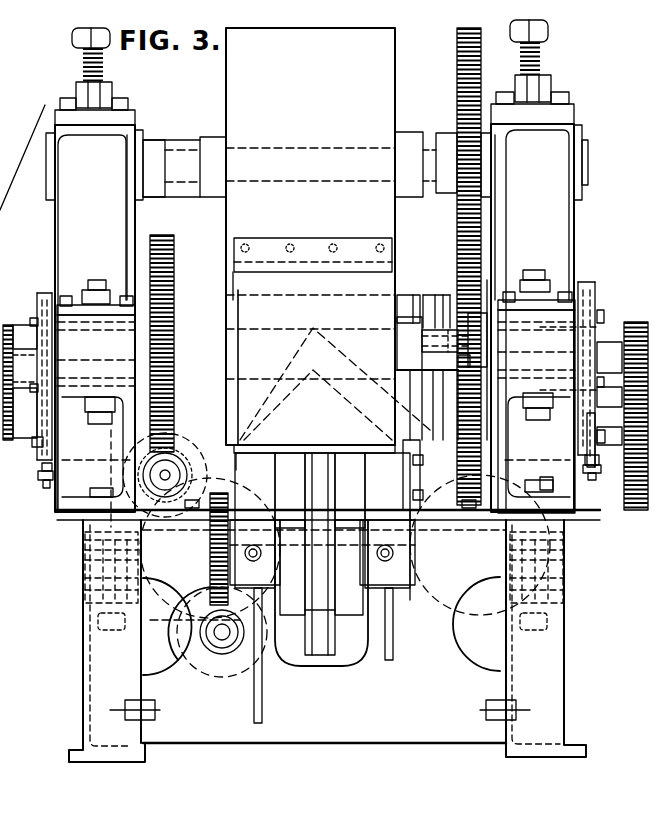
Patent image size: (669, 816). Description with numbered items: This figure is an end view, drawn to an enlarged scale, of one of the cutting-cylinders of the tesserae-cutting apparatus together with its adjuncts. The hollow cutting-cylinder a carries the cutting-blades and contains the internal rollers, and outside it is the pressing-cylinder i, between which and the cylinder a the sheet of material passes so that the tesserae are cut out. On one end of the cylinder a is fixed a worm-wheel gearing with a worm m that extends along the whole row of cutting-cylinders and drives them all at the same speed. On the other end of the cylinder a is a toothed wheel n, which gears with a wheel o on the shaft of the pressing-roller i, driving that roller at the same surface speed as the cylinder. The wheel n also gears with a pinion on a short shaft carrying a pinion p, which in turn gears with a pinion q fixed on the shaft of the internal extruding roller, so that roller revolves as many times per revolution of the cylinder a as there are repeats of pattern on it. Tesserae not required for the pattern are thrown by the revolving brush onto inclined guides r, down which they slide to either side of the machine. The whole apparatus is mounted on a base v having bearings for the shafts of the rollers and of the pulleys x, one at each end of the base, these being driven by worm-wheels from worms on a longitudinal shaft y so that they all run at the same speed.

The pressing-cylinder i is at (310, 240).
The wheel o is at (443, 268).
The pinion q is at (636, 322).
The pinion p is at (630, 490).
The inclined guides r is at (335, 384).
The cutting-cylinder a is at (240, 448).
The toothed wheel n is at (478, 500).
The worm m is at (185, 478).
The base v is at (328, 607).
The pulleys x is at (321, 559).
The longitudinal shaft y is at (232, 668).